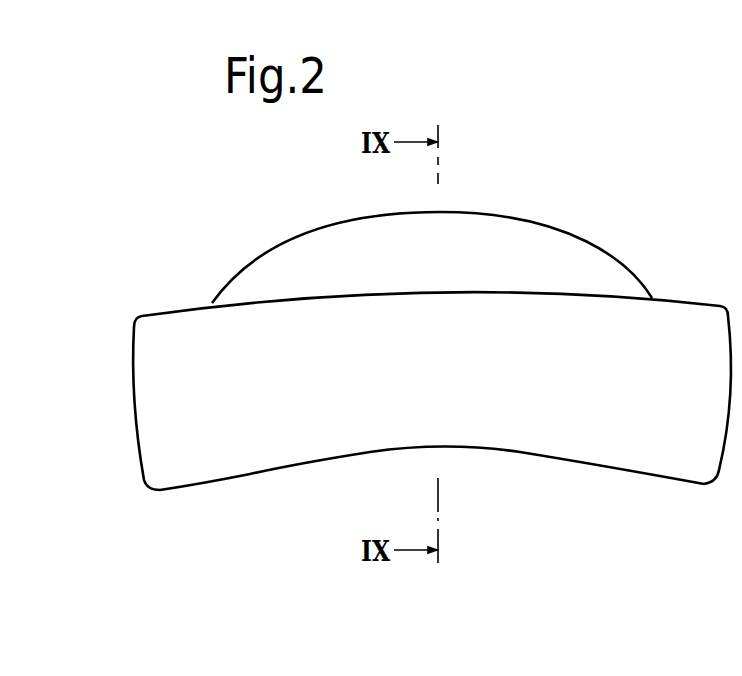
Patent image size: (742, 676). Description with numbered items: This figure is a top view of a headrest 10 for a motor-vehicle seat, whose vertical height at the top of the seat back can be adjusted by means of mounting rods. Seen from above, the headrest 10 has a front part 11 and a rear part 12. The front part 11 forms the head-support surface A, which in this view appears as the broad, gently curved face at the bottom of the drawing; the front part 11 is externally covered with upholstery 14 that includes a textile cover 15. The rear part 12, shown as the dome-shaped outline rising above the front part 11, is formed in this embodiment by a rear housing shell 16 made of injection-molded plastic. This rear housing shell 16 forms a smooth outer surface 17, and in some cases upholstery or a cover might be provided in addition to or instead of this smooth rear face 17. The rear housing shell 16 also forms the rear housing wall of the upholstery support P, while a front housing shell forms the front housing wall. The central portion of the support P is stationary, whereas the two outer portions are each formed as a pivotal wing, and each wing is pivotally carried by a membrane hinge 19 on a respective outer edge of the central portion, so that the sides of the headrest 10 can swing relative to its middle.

The headrest 10 is at (592, 206).
The front part 11 is at (677, 487).
The rear part 12 is at (278, 236).
The upholstery 14 is at (290, 466).
The textile cover 15 is at (210, 486).
The rear housing shell 16 is at (334, 213).
The smooth outer surface 17 is at (550, 218).
The membrane hinge 19 is at (455, 212).
The head-support surface A is at (473, 452).
The upholstery support P is at (636, 243).